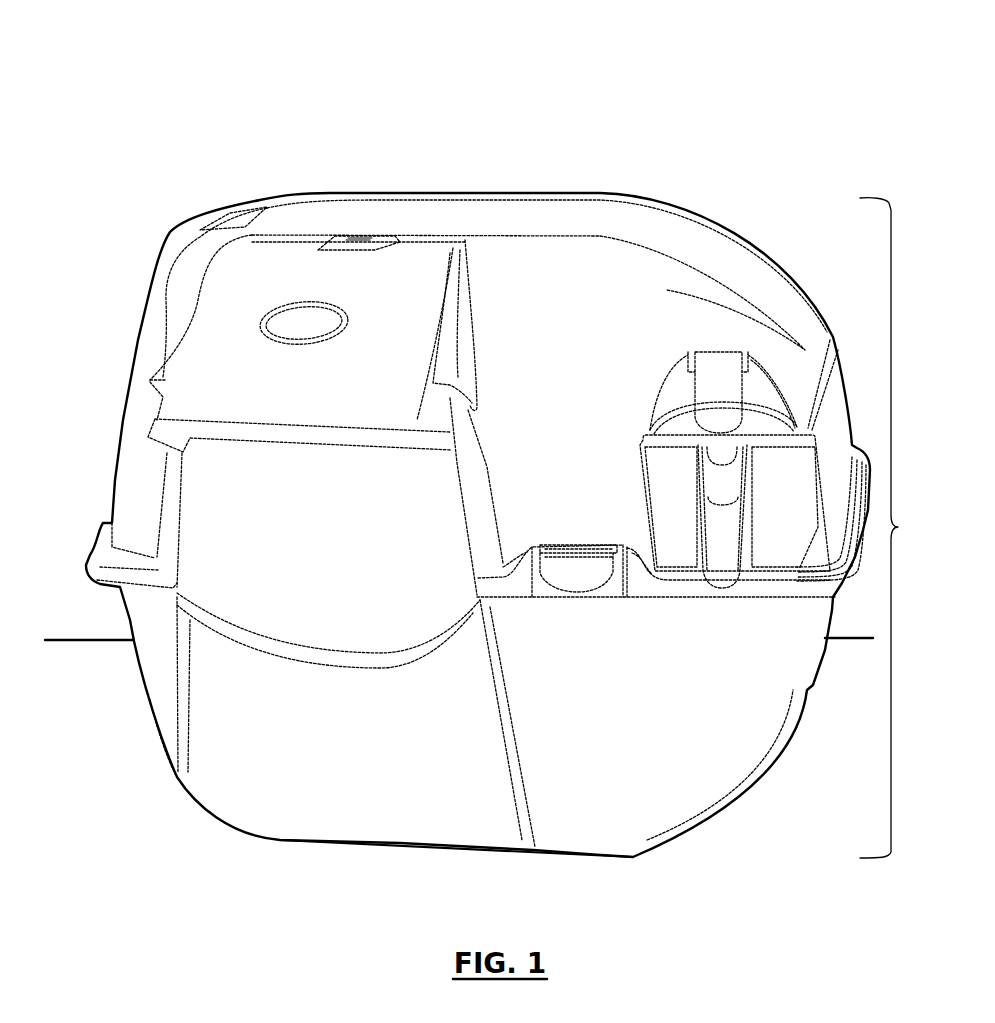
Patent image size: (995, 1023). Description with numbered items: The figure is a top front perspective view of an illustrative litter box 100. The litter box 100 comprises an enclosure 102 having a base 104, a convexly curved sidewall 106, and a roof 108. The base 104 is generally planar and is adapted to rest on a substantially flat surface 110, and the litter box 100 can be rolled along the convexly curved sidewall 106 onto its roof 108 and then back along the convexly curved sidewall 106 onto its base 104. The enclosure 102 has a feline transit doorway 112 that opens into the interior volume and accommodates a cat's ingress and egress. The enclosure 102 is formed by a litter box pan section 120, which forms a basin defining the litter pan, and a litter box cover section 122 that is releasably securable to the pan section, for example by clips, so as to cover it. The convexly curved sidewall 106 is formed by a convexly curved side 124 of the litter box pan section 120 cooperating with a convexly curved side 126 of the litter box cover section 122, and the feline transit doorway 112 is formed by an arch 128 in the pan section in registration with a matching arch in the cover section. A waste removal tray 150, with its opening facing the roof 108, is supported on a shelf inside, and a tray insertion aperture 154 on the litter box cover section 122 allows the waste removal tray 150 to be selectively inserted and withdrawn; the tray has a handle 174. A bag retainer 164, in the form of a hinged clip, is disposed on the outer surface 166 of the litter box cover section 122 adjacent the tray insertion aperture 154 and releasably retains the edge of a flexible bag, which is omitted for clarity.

The litter box 100 is at (205, 108).
The enclosure 102 is at (600, 192).
The base 104 is at (410, 847).
The convexly curved sidewall 106 is at (898, 527).
The roof 108 is at (445, 217).
The substantially flat surface 110 is at (105, 667).
The feline transit doorway 112 is at (312, 553).
The litter box pan section 120 is at (227, 772).
The litter box cover section 122 is at (173, 273).
The convexly curved side 124 is at (773, 766).
The convexly curved side 126 is at (744, 280).
The arch 128 is at (313, 652).
The waste removal tray 150 is at (668, 512).
The tray insertion aperture 154 is at (637, 480).
The bag retainer 164 is at (710, 377).
The outer surface 166 is at (669, 338).
The handle 174 is at (725, 550).